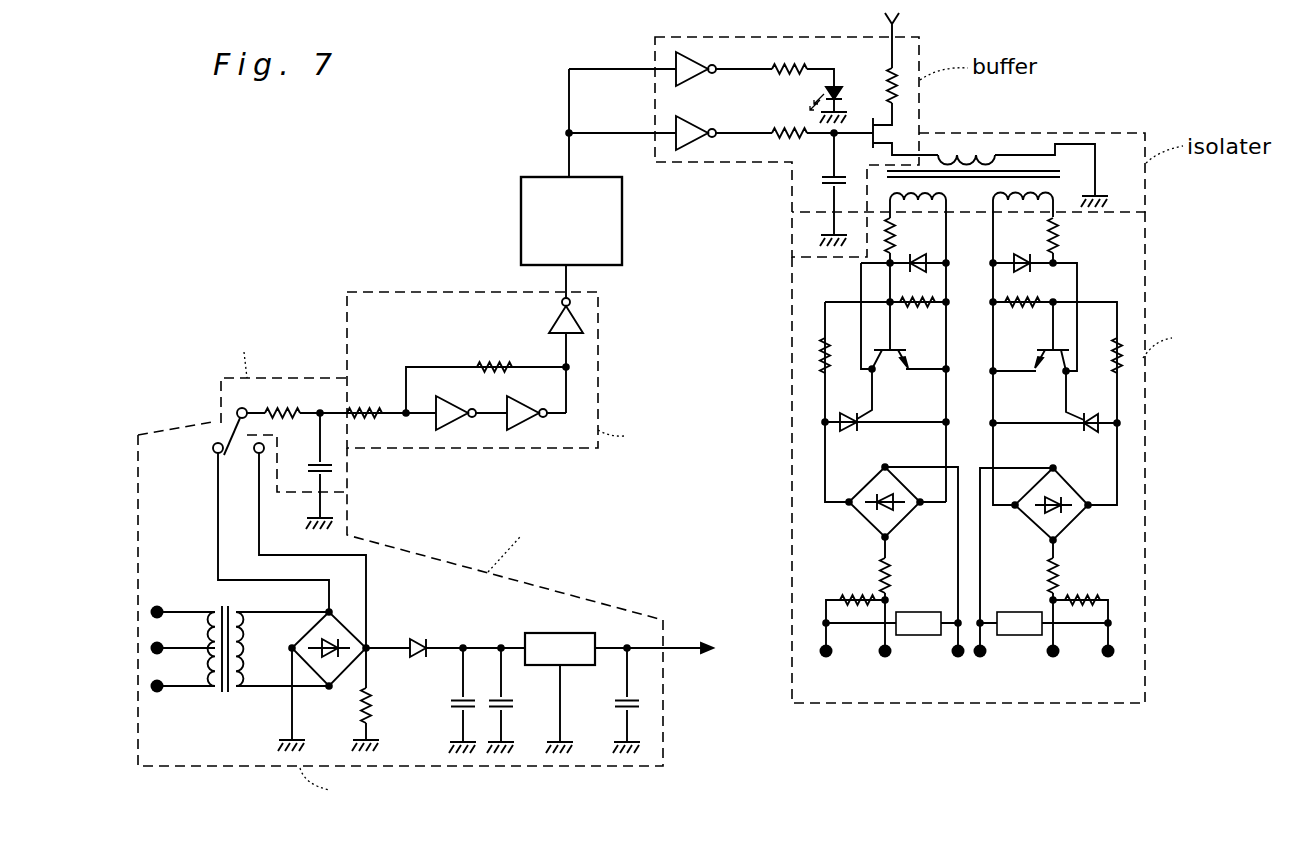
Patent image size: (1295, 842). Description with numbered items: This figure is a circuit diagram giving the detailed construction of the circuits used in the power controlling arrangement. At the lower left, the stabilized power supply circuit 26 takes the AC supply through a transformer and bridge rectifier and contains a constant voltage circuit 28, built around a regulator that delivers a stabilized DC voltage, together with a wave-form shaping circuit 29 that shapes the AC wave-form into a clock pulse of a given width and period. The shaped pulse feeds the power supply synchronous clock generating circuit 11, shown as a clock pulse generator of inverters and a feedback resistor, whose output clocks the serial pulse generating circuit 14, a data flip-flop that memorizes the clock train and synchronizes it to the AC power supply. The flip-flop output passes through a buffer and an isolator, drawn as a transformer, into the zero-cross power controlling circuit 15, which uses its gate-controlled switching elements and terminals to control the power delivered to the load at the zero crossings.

The power supply synchronous clock generating circuit 11 is at (598, 333).
The serial pulse generating circuit 14 is at (622, 209).
The zero-cross power controlling circuit 15 is at (1143, 442).
The stabilized power supply circuit 26 is at (425, 615).
The constant voltage circuit 28 is at (575, 633).
The wave-form shaping circuit 29 is at (262, 378).